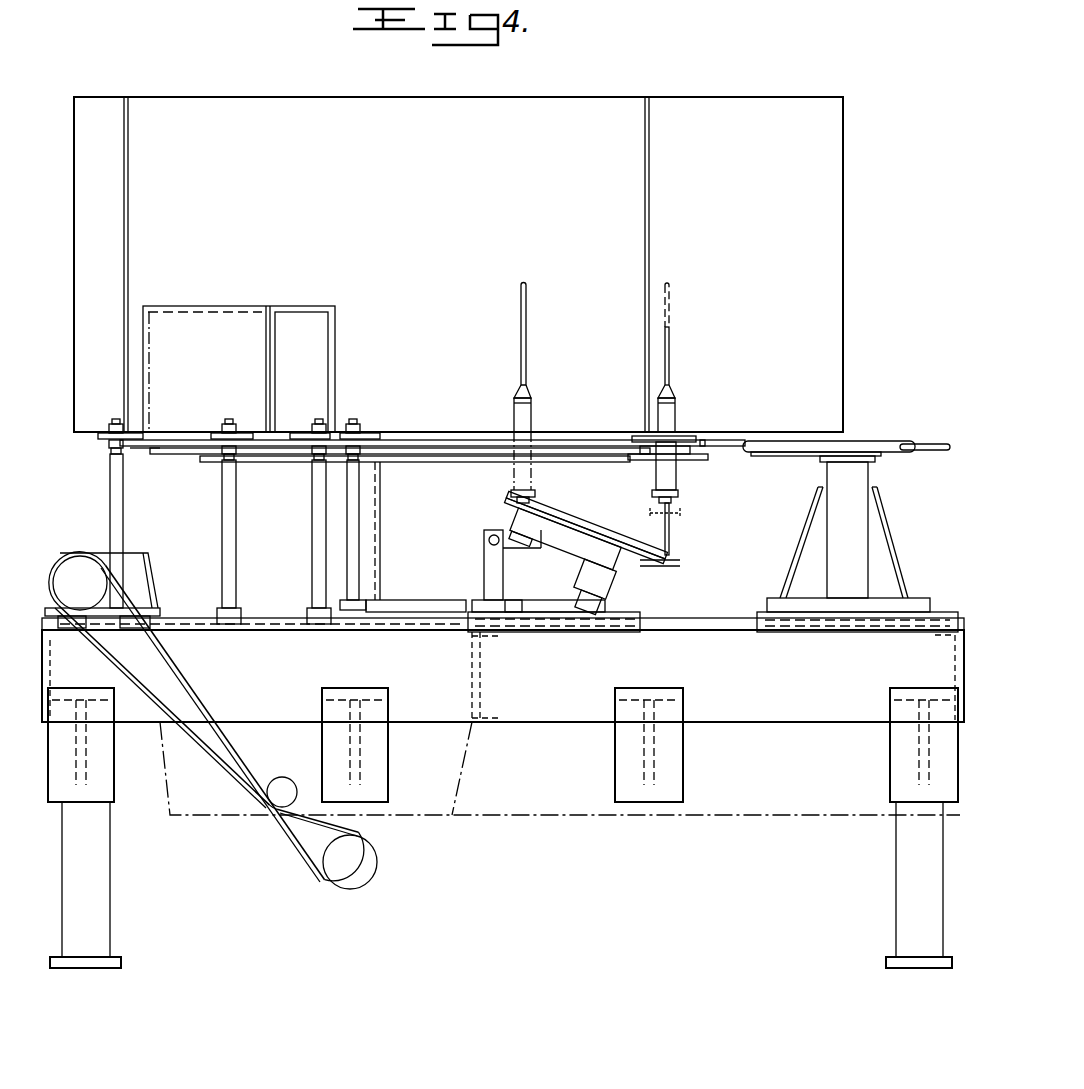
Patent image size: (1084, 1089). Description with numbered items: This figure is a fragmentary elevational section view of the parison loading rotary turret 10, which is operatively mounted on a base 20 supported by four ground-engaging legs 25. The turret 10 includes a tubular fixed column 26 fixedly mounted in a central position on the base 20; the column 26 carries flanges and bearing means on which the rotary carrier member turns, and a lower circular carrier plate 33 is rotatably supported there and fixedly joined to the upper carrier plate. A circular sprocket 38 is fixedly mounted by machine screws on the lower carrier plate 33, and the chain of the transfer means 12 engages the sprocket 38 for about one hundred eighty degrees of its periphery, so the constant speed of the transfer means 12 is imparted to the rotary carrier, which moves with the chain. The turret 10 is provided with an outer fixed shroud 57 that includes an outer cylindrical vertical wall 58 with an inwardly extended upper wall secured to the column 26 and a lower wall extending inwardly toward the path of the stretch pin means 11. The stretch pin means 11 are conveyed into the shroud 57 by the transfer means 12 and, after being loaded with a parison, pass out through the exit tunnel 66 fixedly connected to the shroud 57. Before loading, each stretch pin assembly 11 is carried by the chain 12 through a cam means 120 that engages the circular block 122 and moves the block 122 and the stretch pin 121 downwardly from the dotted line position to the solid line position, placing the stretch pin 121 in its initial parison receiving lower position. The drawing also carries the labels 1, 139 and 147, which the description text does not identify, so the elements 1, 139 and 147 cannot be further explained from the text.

The parison loading rotary turret 10 is at (563, 95).
The outer cylindrical vertical wall 58 is at (830, 218).
The outer fixed shroud 57 is at (845, 272).
The exit tunnel 66 is at (304, 302).
The lower circular carrier plate 33 is at (167, 452).
The circular sprocket 38 is at (188, 455).
The nozzle 1 is at (523, 393).
The cam means 120 is at (597, 514).
The circular block 122 is at (678, 566).
The stretch pin 121 is at (672, 352).
The stretch pin means 11 is at (686, 403).
The transfer means chain 12 is at (692, 468).
The turntable plate 139 is at (897, 440).
The pedestal 147 is at (873, 520).
The tubular fixed column 26 is at (425, 588).
The base 20 is at (862, 728).
The ground-engaging legs 25 is at (98, 912).